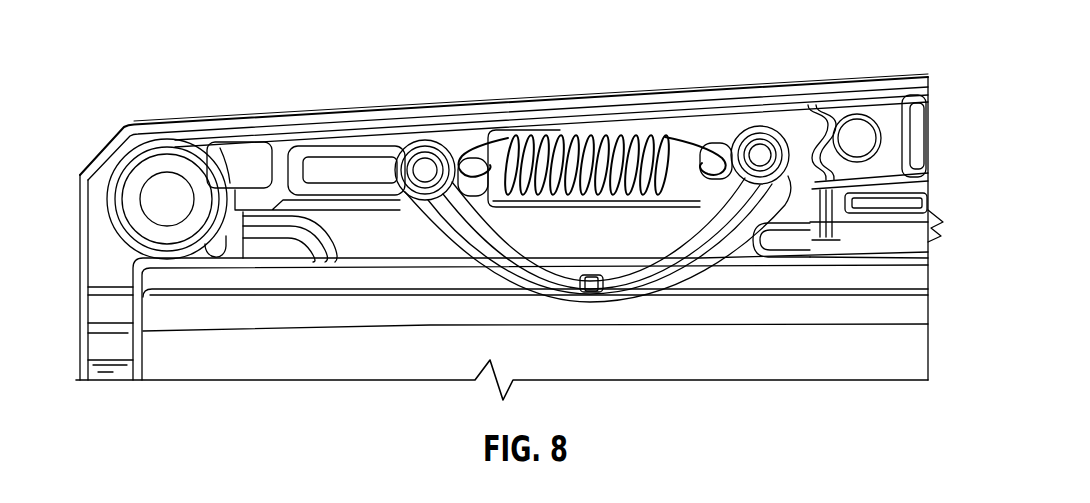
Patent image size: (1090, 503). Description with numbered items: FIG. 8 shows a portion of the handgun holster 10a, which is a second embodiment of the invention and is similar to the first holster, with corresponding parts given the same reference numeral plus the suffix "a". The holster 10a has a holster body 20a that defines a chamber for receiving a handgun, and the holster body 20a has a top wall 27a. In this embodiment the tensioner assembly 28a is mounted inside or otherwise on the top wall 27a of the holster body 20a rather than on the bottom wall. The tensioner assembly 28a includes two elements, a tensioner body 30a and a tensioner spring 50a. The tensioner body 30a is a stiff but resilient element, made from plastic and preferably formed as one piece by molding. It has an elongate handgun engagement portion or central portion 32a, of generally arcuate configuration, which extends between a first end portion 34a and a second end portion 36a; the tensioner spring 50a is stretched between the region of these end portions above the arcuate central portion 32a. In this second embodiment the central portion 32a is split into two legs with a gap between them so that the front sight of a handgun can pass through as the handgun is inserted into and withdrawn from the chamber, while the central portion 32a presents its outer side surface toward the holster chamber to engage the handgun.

The handgun holster 10a is at (161, 96).
The holster body 20a is at (74, 244).
The top wall 27a is at (260, 117).
The tensioner assembly 28a is at (356, 137).
The tensioner body 30a is at (686, 228).
The central portion 32a is at (568, 272).
The first end portion 34a is at (760, 122).
The second end portion 36a is at (422, 152).
The tensioner spring 50a is at (557, 134).